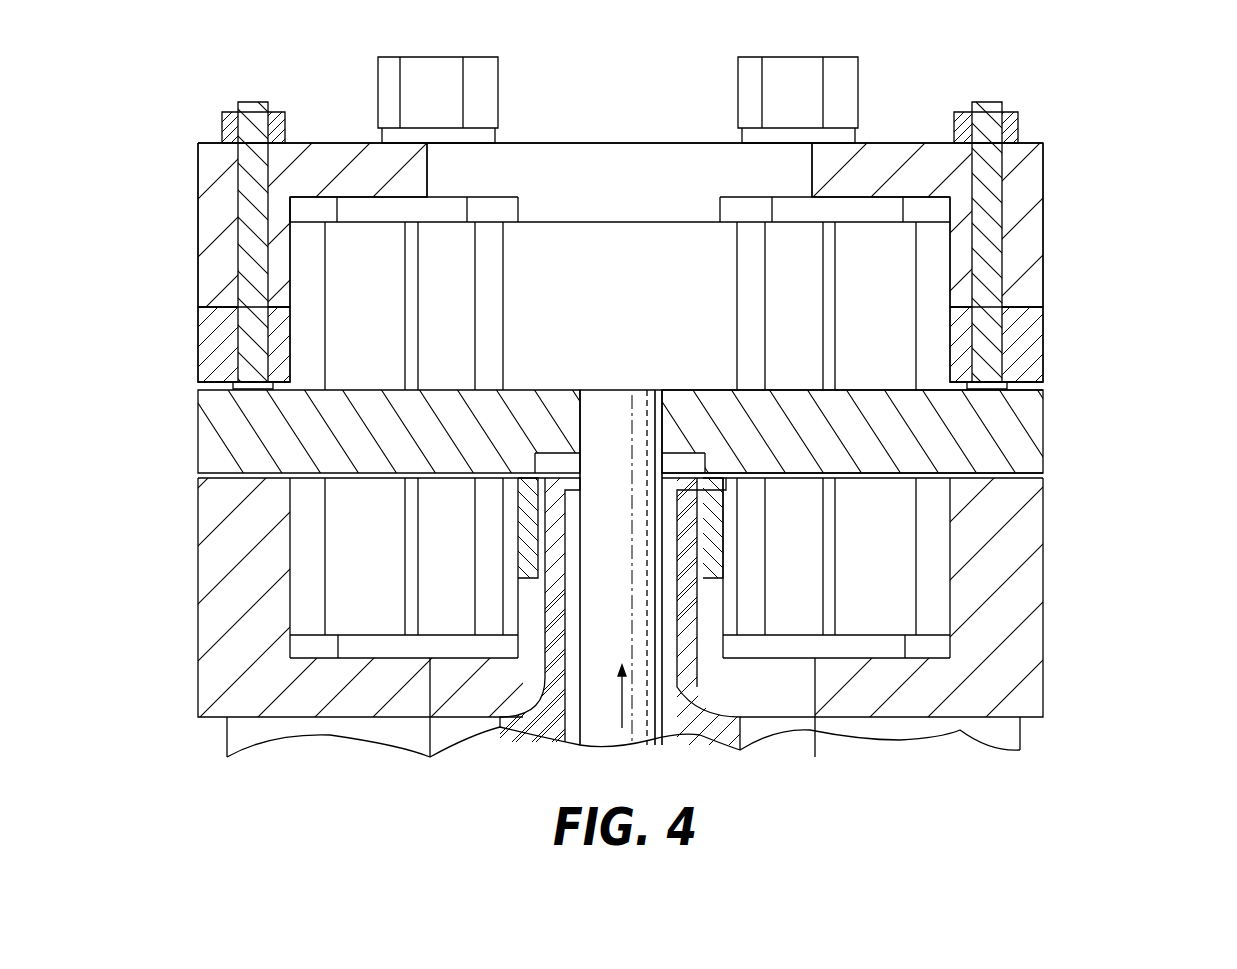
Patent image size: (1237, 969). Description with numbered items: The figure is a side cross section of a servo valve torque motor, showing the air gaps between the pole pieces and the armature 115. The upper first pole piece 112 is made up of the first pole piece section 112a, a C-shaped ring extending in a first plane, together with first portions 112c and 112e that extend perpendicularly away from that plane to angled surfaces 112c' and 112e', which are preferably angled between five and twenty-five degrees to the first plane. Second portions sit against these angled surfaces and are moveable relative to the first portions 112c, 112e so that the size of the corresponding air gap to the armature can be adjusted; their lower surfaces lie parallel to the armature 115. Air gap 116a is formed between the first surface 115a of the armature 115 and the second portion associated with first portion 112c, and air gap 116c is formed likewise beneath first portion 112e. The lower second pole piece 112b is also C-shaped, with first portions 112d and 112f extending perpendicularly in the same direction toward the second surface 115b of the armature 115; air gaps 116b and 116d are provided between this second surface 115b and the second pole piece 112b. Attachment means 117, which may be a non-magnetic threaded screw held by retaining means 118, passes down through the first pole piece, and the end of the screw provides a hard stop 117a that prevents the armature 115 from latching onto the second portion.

The first pole piece 112 is at (1160, 143).
The first pole piece section 112a is at (618, 142).
The second pole piece 112b is at (310, 700).
The first portion 112c is at (196, 225).
The angled surface 112c' is at (196, 279).
The first portion 112d is at (212, 562).
The first portion 112e is at (1045, 225).
The angled surface 112e' is at (1048, 279).
The portion 112f is at (1035, 562).
The armature 115 is at (215, 440).
The first surface 115a is at (872, 388).
The second surface 115b is at (876, 478).
The air gap 116a is at (205, 388).
The air gap 116b is at (212, 478).
The air gap 116c is at (1046, 388).
The air gap 116d is at (1046, 478).
The attachment means 117 is at (255, 102).
The hard stop 117a is at (265, 392).
The retaining means 118 is at (232, 124).